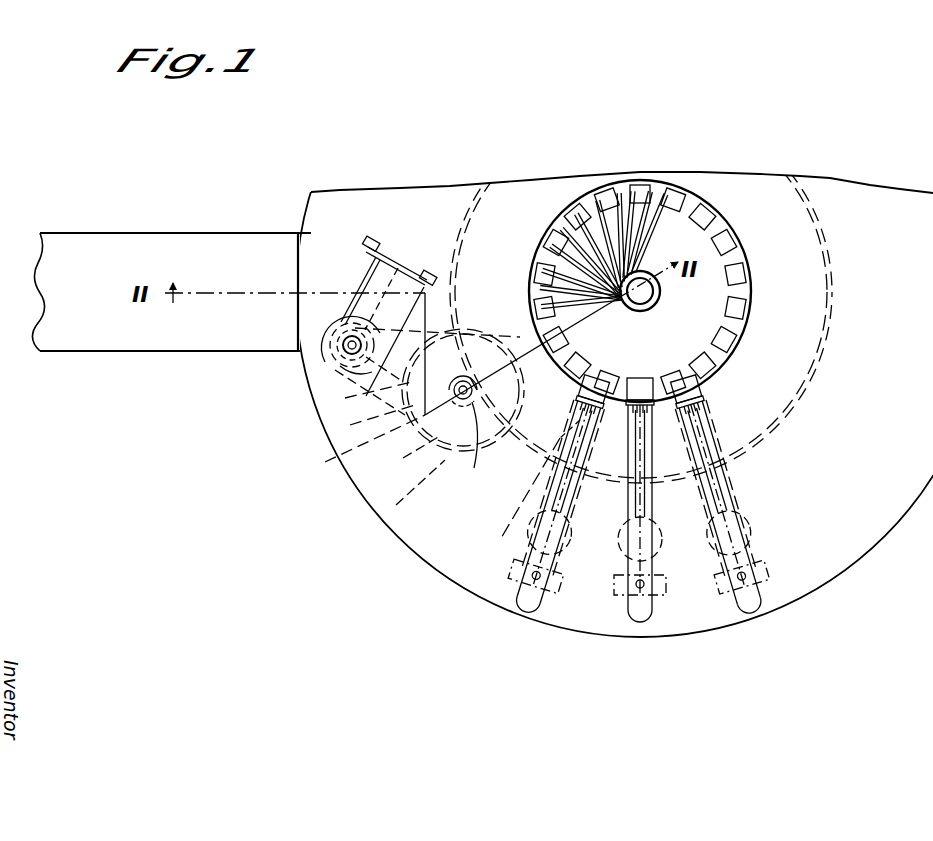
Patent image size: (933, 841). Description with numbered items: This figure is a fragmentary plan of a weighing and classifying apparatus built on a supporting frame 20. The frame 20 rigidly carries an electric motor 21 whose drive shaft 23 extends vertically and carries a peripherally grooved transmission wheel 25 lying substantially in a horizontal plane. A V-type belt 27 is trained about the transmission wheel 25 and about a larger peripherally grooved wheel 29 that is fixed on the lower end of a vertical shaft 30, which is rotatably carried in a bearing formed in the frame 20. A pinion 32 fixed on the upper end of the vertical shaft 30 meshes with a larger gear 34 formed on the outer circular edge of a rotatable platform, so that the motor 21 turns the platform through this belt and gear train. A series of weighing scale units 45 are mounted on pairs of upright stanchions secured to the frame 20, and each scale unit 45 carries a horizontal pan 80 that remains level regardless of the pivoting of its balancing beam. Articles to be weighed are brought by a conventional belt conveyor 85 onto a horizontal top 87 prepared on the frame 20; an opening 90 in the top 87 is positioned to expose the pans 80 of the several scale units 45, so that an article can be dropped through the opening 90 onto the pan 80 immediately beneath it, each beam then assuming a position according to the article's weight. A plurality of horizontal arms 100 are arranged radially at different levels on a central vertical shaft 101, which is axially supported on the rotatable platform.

The supporting frame 20 is at (752, 175).
The electric motor 21 is at (335, 357).
The drive shaft 23 is at (345, 398).
The transmission wheel 25 is at (350, 425).
The belt 27 is at (325, 462).
The larger peripherally grooved wheel 29 is at (396, 505).
The vertical shaft 30 is at (462, 480).
The pinion 32 is at (403, 458).
The gear 34 is at (524, 546).
The weighing scale unit 45 is at (623, 555).
The pan 80 is at (645, 380).
The belt conveyor 85 is at (196, 332).
The horizontal top 87 is at (877, 533).
The opening 90 is at (593, 382).
The horizontal arms 100 is at (607, 246).
The central vertical shaft 101 is at (656, 298).